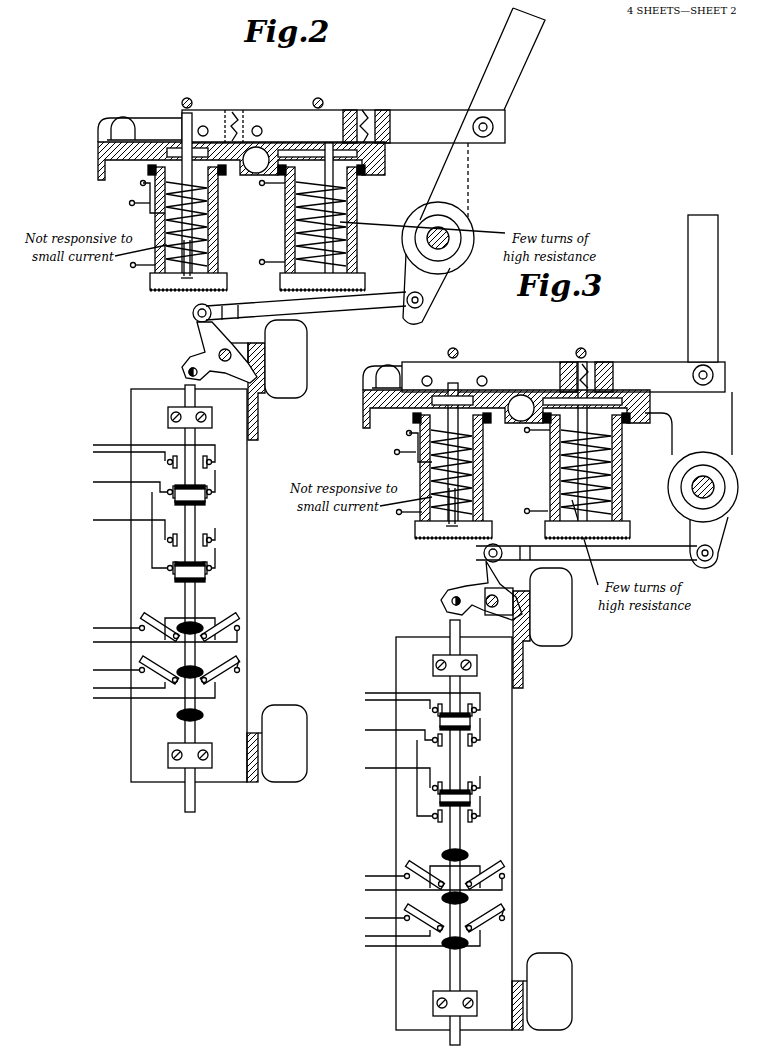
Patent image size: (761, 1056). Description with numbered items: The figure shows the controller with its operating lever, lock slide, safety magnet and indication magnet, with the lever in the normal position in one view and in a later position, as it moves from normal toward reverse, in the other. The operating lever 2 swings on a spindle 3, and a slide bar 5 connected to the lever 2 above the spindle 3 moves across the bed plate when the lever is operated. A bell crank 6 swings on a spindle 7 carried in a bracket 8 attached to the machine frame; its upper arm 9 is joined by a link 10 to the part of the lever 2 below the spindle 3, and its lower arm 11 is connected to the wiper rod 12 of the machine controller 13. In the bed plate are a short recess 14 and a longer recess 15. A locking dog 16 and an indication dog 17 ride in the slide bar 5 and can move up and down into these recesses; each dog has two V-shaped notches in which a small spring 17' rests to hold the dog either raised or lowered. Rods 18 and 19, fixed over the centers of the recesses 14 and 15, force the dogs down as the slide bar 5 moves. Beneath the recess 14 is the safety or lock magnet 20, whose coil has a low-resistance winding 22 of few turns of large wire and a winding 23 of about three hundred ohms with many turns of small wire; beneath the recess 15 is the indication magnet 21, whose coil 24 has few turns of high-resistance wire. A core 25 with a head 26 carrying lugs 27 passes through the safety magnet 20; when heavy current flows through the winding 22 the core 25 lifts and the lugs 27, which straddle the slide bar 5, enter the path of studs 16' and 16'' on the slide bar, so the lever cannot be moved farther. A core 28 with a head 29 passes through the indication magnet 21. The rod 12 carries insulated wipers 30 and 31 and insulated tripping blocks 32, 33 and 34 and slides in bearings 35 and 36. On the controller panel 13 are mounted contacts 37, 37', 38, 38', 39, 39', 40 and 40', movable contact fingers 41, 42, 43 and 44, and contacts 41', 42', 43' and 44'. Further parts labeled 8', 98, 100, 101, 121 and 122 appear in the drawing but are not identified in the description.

In FIG. 2, the operating lever 2 is at (521, 78).
In FIG. 3, the operating lever 2 is at (720, 340).
In FIG. 2, the spindle 3 is at (450, 238).
In FIG. 3, the spindle 3 is at (715, 487).
In FIG. 2, the slide bar 5 is at (423, 122).
In FIG. 3, the slide bar 5 is at (657, 376).
In FIG. 2, the bell crank 6 is at (236, 343).
In FIG. 3, the bell crank 6 is at (481, 590).
In FIG. 2, the spindle 7 is at (231, 355).
In FIG. 3, the spindle 7 is at (499, 601).
In FIG. 2, the bracket 8 is at (261, 380).
In FIG. 3, the bracket 8 is at (528, 628).
In FIG. 2, the lower bracket 8' is at (277, 743).
In FIG. 3, the lower bracket 8' is at (542, 991).
In FIG. 2, the upper arm 9 is at (195, 328).
In FIG. 3, the upper arm 9 is at (486, 571).
In FIG. 2, the link 10 is at (340, 310).
In FIG. 3, the link 10 is at (640, 555).
In FIG. 2, the lower arm 11 is at (184, 362).
In FIG. 3, the lower arm 11 is at (446, 596).
In FIG. 2, the wiper rod 12 is at (185, 439).
In FIG. 3, the wiper rod 12 is at (450, 679).
In FIG. 2, the machine controller 13 is at (247, 518).
In FIG. 3, the machine controller 13 is at (512, 745).
In FIG. 2, the short recess 14 is at (172, 148).
In FIG. 3, the short recess 14 is at (437, 395).
In FIG. 2, the longer recess 15 is at (334, 145).
In FIG. 3, the longer recess 15 is at (563, 398).
In FIG. 2, the locking dog 16 is at (235, 111).
In FIG. 2, the stud 16' is at (260, 107).
In FIG. 3, the stud 16' is at (492, 361).
In FIG. 2, the stud 16'' is at (212, 107).
In FIG. 3, the stud 16'' is at (407, 361).
In FIG. 2, the indication dog 17 is at (355, 111).
In FIG. 3, the indication dog 17 is at (585, 364).
In FIG. 2, the small spring 17' is at (377, 111).
In FIG. 3, the small spring 17' is at (614, 364).
In FIG. 2, the rod 18 is at (184, 100).
In FIG. 3, the rod 18 is at (456, 352).
In FIG. 2, the rod 19 is at (315, 99).
In FIG. 3, the rod 19 is at (578, 351).
In FIG. 2, the safety or lock magnet 20 is at (218, 216).
In FIG. 3, the safety or lock magnet 20 is at (484, 469).
In FIG. 2, the indication magnet 21 is at (352, 217).
In FIG. 3, the indication magnet 21 is at (615, 471).
In FIG. 2, the winding 22 is at (208, 193).
In FIG. 3, the winding 22 is at (475, 444).
In FIG. 2, the winding 23 is at (208, 246).
In FIG. 3, the winding 23 is at (475, 497).
In FIG. 2, the coil 24 is at (349, 191).
In FIG. 3, the coil 24 is at (612, 444).
In FIG. 2, the core 25 is at (189, 268).
In FIG. 3, the core 25 is at (455, 518).
In FIG. 2, the head 26 is at (188, 148).
In FIG. 3, the head 26 is at (447, 395).
In FIG. 2, the lugs or projections 27 is at (190, 112).
In FIG. 3, the lugs or projections 27 is at (460, 390).
In FIG. 2, the core 28 is at (345, 268).
In FIG. 3, the core 28 is at (605, 522).
In FIG. 2, the head 29 is at (287, 149).
In FIG. 3, the head 29 is at (550, 398).
In FIG. 2, the wiper 30 is at (198, 503).
In FIG. 3, the wiper 30 is at (462, 732).
In FIG. 2, the wiper 31 is at (198, 583).
In FIG. 3, the wiper 31 is at (446, 800).
In FIG. 2, the tripping block 32 is at (203, 625).
In FIG. 3, the tripping block 32 is at (452, 853).
In FIG. 2, the tripping block 33 is at (180, 668).
In FIG. 3, the tripping block 33 is at (447, 899).
In FIG. 2, the tripping block 34 is at (201, 718).
In FIG. 3, the tripping block 34 is at (469, 947).
In FIG. 2, the bearing 35 is at (212, 422).
In FIG. 3, the bearing 35 is at (478, 660).
In FIG. 2, the bearing 36 is at (212, 754).
In FIG. 3, the bearing 36 is at (478, 1000).
In FIG. 2, the contact 37 is at (135, 464).
In FIG. 3, the contact 37 is at (403, 711).
In FIG. 2, the contact 37' is at (166, 460).
In FIG. 3, the contact 37' is at (434, 707).
In FIG. 2, the contact 38 is at (135, 495).
In FIG. 3, the contact 38 is at (403, 742).
In FIG. 2, the contact 38' is at (222, 486).
In FIG. 3, the contact 38' is at (486, 732).
In FIG. 2, the contact 39 is at (135, 537).
In FIG. 3, the contact 39 is at (403, 782).
In FIG. 2, the contact 39' is at (221, 541).
In FIG. 3, the contact 39' is at (486, 786).
In FIG. 2, the contact 40 is at (153, 541).
In FIG. 3, the contact 40 is at (420, 785).
In FIG. 2, the contact 40' is at (221, 567).
In FIG. 3, the contact 40' is at (486, 813).
In FIG. 2, the movable contact finger 41 is at (178, 616).
In FIG. 3, the movable contact finger 41 is at (443, 872).
In FIG. 2, the contact 41' is at (119, 621).
In FIG. 3, the contact 41' is at (387, 884).
In FIG. 2, the movable contact finger 42 is at (220, 629).
In FIG. 3, the movable contact finger 42 is at (485, 872).
In FIG. 2, the contact 42' is at (185, 626).
In FIG. 3, the contact 42' is at (450, 884).
In FIG. 2, the movable contact finger 43 is at (136, 668).
In FIG. 3, the movable contact finger 43 is at (404, 920).
In FIG. 2, the contact 43' is at (119, 677).
In FIG. 3, the contact 43' is at (387, 927).
In FIG. 2, the movable contact finger 44 is at (166, 673).
In FIG. 3, the movable contact finger 44 is at (435, 925).
In FIG. 2, the contact 44' is at (228, 673).
In FIG. 3, the contact 44' is at (520, 923).
In FIG. 2, the terminal 98 is at (130, 205).
In FIG. 3, the terminal 98 is at (395, 454).
In FIG. 2, the terminal 100 is at (131, 267).
In FIG. 3, the terminal 100 is at (397, 514).
In FIG. 2, the terminal 101 is at (141, 184).
In FIG. 3, the terminal 101 is at (407, 434).
In FIG. 2, the terminal 121 is at (263, 186).
In FIG. 3, the terminal 121 is at (528, 433).
In FIG. 2, the terminal 122 is at (262, 259).
In FIG. 3, the terminal 122 is at (527, 508).